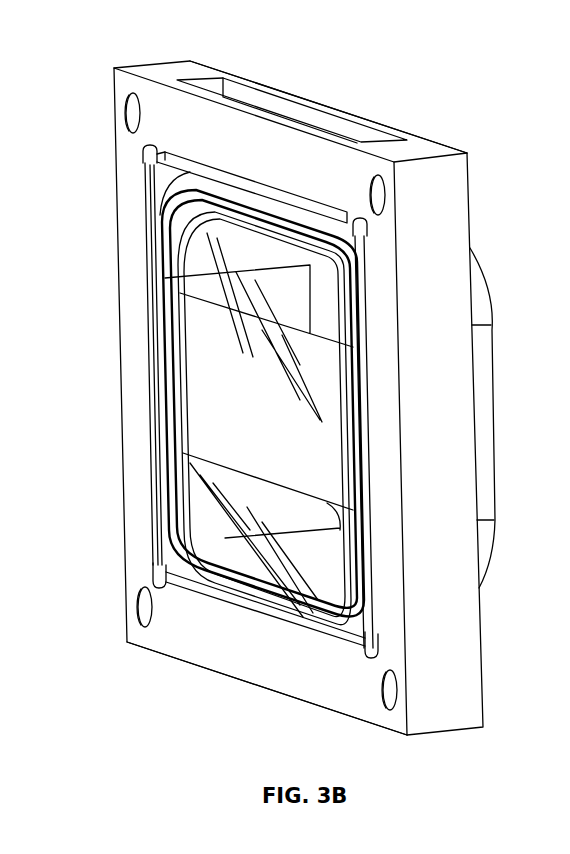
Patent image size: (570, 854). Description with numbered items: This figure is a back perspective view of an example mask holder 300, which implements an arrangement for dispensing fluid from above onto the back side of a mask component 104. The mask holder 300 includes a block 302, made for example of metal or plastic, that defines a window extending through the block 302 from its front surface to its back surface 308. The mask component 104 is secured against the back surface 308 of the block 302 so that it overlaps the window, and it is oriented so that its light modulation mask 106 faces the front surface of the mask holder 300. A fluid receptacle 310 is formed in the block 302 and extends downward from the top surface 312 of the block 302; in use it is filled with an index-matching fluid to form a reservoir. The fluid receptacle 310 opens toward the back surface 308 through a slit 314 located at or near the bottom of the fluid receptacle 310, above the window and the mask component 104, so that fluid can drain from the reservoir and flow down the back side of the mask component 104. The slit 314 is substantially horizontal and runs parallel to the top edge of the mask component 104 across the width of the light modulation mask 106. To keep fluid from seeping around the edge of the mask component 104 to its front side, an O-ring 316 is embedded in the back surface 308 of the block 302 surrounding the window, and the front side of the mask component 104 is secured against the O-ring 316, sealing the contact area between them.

The mask holder 300 is at (479, 91).
The block 302 is at (472, 191).
The back surface 308 is at (158, 640).
The fluid receptacle 310 is at (298, 102).
The top surface 312 is at (159, 69).
The slit 314 is at (180, 167).
The O-ring 316 is at (297, 607).
The mask component 104 is at (165, 537).
The light modulation mask 106 is at (202, 375).